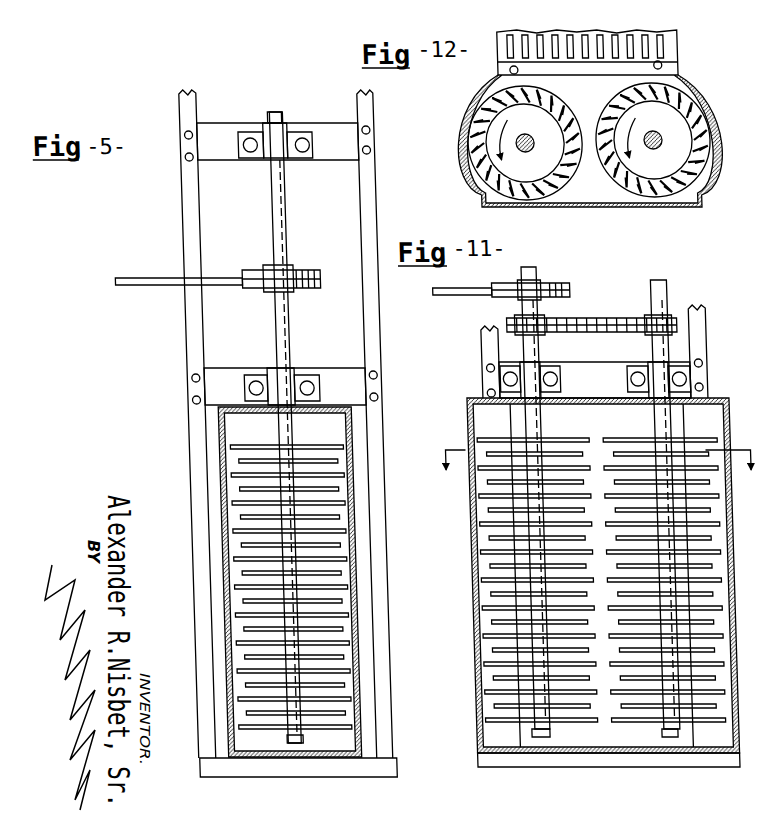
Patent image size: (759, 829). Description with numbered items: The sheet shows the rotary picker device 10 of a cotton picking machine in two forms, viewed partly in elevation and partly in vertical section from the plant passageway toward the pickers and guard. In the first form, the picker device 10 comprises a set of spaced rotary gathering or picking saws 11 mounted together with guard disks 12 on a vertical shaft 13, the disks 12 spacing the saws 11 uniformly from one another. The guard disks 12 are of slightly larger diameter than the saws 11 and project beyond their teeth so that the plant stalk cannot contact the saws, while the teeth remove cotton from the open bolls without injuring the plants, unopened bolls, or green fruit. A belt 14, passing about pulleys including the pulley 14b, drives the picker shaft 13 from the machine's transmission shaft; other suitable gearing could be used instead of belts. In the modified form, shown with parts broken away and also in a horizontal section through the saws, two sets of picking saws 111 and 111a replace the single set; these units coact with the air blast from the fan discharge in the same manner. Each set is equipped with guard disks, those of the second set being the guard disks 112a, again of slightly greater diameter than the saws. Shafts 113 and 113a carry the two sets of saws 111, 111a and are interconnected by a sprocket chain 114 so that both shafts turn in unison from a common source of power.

In FIG. 5, the rotary picker device 10 is at (224, 460).
In FIG. 11, the rotary picker device 10 is at (758, 322).
In FIG. 5, the guard disks 12 is at (310, 445).
In FIG. 11, the guard disks 12 is at (594, 449).
In FIG. 5, the vertical shaft 13 is at (278, 220).
In FIG. 5, the belt 14 is at (142, 278).
In FIG. 11, the belt 14 is at (458, 295).
In FIG. 5, the pulley 14b is at (317, 270).
In FIG. 11, the pulley 14b is at (569, 282).
In FIG. 12, the rotary picking saws 11 is at (710, 147).
In FIG. 12, the first set of picking saws 111 is at (543, 125).
In FIG. 12, the second set of picking saws 111a is at (680, 118).
In FIG. 11, the guard disks 112a is at (649, 432).
In FIG. 11, the shaft 113 is at (534, 347).
In FIG. 12, the shaft 113 is at (516, 138).
In FIG. 11, the shaft 113a is at (677, 297).
In FIG. 12, the shaft 113a is at (663, 135).
In FIG. 11, the sprocket chain 114 is at (613, 318).